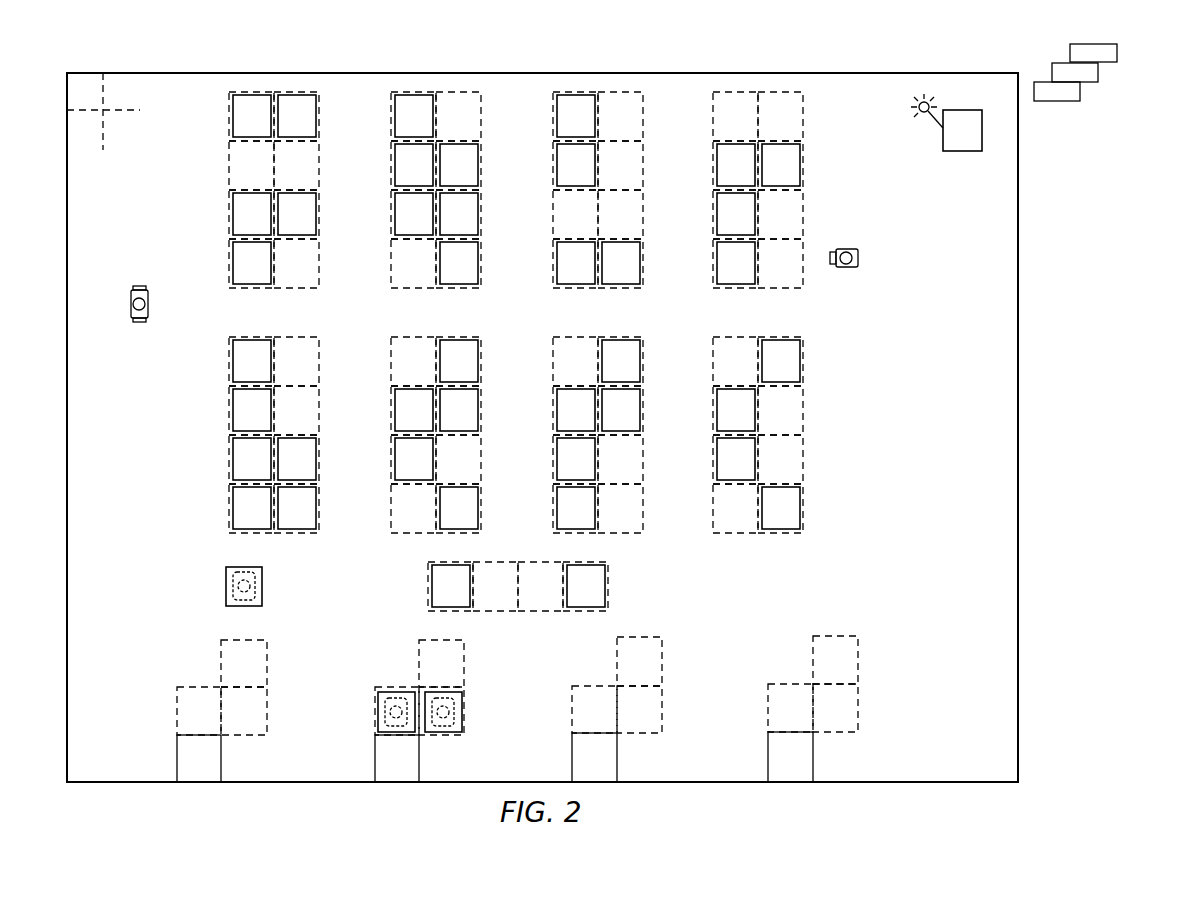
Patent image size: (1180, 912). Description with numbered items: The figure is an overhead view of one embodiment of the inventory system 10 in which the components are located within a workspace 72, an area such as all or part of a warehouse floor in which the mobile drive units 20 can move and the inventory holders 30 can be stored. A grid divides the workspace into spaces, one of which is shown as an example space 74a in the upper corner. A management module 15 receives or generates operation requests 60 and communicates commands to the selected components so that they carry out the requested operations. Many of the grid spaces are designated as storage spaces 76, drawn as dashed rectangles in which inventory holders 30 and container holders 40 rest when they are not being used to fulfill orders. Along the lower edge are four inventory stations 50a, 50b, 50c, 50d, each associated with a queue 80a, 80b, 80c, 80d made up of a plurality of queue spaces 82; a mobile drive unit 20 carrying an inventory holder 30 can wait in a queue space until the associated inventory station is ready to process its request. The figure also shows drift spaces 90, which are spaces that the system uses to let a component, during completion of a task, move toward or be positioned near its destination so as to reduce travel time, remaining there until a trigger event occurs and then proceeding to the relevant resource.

The inventory system 10 is at (1106, 292).
The management module 15 is at (951, 143).
The mobile drive unit 20 is at (138, 286).
The inventory holder 30 is at (262, 586).
The container holder 40 is at (516, 400).
The inventory station 50a is at (183, 770).
The inventory station 50b is at (381, 770).
The inventory station 50c is at (578, 770).
The inventory station 50d is at (774, 770).
The operation request 60 is at (1117, 53).
The workspace 72 is at (936, 460).
The space 74a is at (89, 86).
The storage space 76 is at (229, 116).
The queue 80a is at (152, 672).
The queue 80b is at (353, 672).
The queue 80c is at (686, 664).
The queue 80d is at (883, 664).
The queue space 82 is at (233, 675).
The drift space 90 is at (485, 597).